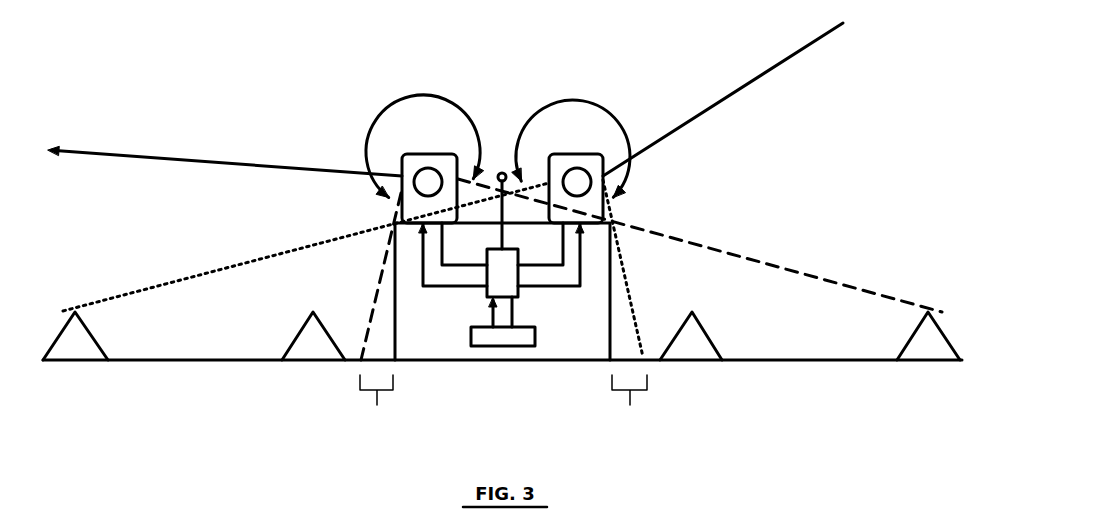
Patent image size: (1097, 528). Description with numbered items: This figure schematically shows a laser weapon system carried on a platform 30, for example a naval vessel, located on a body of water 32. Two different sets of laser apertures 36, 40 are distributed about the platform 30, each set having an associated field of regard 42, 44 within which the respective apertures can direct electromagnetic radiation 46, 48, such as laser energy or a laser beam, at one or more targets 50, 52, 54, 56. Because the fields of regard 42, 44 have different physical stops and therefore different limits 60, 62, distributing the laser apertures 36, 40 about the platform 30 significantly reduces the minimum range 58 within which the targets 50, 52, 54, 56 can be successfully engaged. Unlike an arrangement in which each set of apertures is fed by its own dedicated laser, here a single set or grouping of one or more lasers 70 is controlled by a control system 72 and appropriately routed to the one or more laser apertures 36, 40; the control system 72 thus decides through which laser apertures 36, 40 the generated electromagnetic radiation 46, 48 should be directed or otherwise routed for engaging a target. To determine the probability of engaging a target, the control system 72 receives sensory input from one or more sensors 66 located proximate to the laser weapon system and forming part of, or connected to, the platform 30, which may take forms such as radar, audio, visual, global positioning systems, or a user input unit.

The platform 30 is at (498, 241).
The body of water 32 is at (420, 390).
The laser apertures 36 is at (435, 154).
The laser apertures 40 is at (575, 160).
The field of regard 42 is at (377, 115).
The field of regard 44 is at (620, 117).
The electromagnetic radiation 46 is at (83, 147).
The electromagnetic radiation 48 is at (840, 35).
The target 50 is at (82, 335).
The target 52 is at (303, 337).
The target 54 is at (698, 335).
The target 56 is at (918, 337).
The minimum range 58 is at (503, 405).
The limits to the fields of regard 60 is at (223, 260).
The limits to the fields of regard 62 is at (372, 303).
The sensors 66 is at (505, 162).
The lasers 70 is at (543, 335).
The control system 72 is at (480, 297).